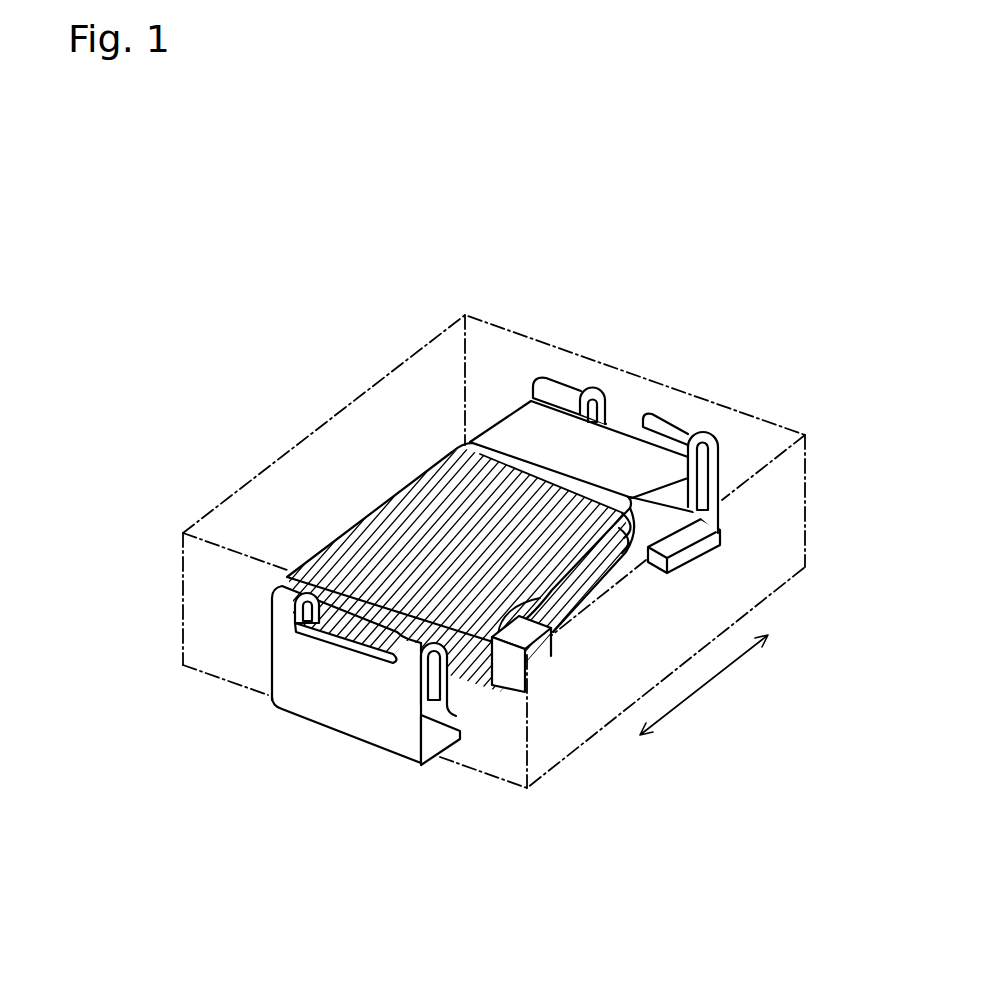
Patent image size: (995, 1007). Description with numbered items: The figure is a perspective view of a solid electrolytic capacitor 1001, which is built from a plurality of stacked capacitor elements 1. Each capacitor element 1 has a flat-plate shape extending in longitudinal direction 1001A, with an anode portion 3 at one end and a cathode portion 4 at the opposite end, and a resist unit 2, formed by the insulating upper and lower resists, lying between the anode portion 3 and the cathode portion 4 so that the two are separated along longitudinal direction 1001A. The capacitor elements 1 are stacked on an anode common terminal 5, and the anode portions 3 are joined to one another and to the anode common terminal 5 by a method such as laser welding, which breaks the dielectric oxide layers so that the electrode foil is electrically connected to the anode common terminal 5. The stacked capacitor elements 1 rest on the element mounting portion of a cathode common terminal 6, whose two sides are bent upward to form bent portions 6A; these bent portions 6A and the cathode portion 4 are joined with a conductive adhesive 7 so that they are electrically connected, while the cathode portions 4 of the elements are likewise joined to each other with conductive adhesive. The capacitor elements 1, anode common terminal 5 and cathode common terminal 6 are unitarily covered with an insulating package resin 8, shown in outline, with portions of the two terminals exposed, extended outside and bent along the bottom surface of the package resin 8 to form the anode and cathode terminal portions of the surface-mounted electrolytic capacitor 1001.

The electrolytic capacitor 1001 is at (805, 236).
The longitudinal direction 1001A is at (697, 692).
The capacitor element 1 is at (527, 469).
The resist unit 2 is at (470, 441).
The anode portion 3 is at (519, 427).
The cathode portion 4 is at (383, 527).
The anode common terminal 5 is at (668, 422).
The cathode common terminal 6 is at (330, 692).
The bent portion 6A is at (515, 670).
The conductive adhesive 7 is at (566, 724).
The package resin 8 is at (743, 427).